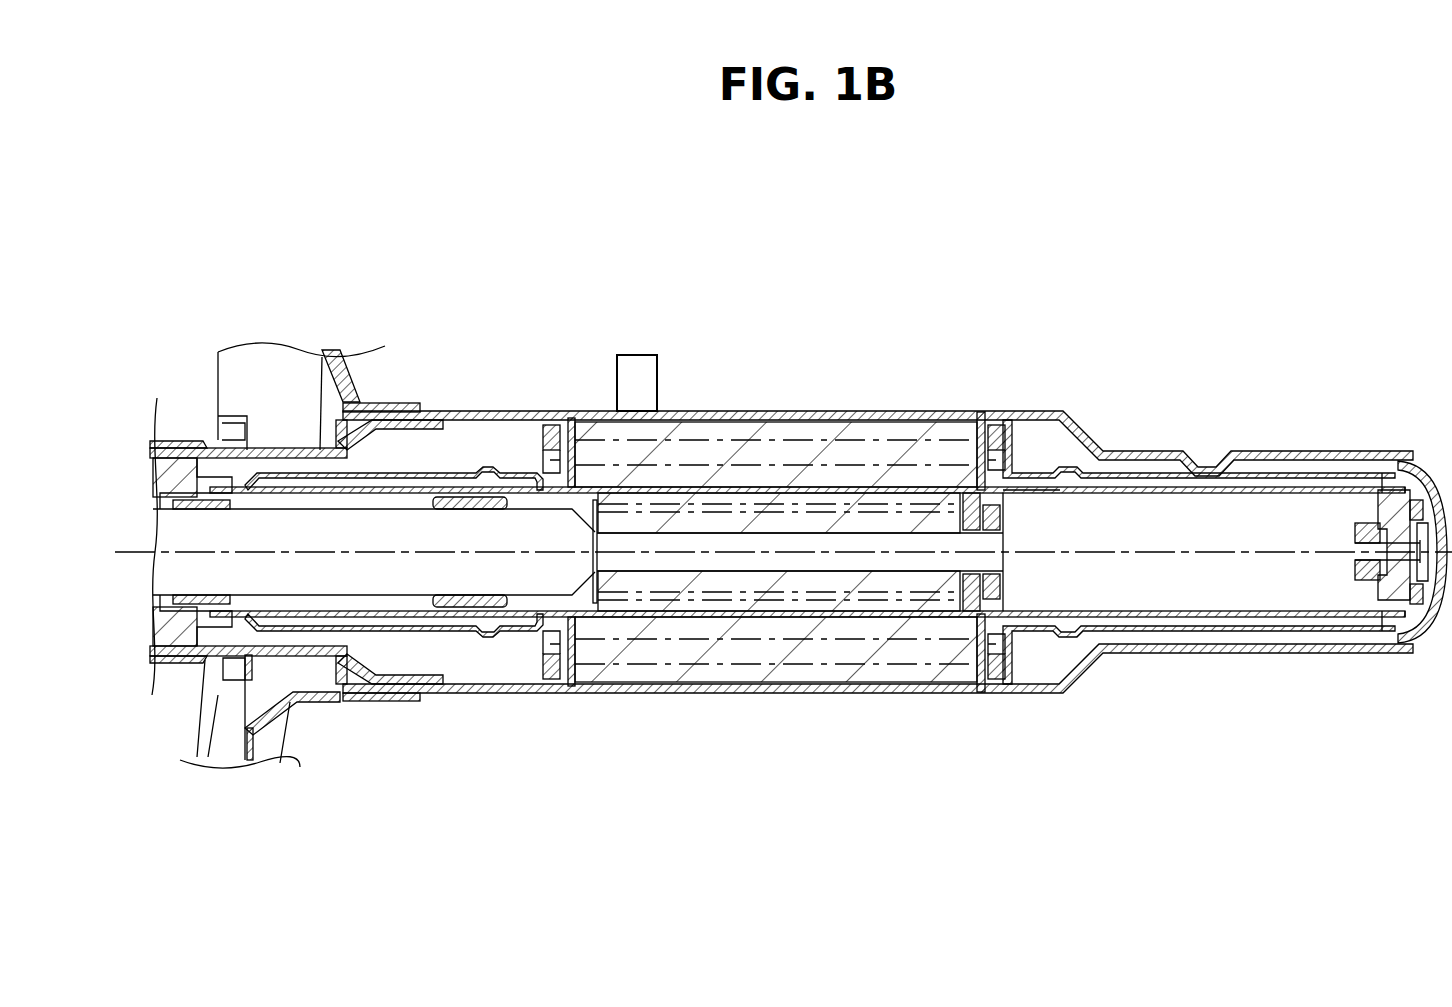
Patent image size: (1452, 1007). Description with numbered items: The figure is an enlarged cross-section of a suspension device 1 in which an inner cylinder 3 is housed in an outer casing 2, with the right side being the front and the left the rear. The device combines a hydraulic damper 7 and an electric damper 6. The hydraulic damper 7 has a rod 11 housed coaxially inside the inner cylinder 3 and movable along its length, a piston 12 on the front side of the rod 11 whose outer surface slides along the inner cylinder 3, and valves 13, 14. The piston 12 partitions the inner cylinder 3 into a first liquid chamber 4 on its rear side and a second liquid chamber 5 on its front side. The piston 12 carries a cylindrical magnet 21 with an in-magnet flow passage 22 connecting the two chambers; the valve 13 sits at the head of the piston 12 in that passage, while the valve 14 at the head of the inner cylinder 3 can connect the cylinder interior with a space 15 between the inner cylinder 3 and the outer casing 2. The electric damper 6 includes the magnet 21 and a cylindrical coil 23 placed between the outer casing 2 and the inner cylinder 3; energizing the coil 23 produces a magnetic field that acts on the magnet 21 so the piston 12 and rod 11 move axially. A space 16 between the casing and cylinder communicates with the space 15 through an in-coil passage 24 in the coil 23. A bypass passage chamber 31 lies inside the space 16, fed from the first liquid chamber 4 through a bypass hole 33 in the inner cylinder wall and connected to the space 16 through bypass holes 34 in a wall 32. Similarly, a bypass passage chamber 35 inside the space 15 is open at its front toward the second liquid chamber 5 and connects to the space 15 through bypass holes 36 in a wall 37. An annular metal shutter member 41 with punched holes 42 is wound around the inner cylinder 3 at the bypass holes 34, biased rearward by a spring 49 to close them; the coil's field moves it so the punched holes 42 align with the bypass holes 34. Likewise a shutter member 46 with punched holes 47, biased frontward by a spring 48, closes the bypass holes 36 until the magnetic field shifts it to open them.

The suspension device 1 is at (1372, 330).
The outer casing 2 is at (865, 411).
The inner cylinder 3 is at (1167, 487).
The first liquid chamber 4 is at (402, 505).
The second liquid chamber 5 is at (1303, 522).
The electric damper 6 is at (767, 627).
The hydraulic damper 7 is at (587, 602).
The rod 11 is at (408, 567).
The piston 12 is at (1005, 520).
The valve 13 is at (1005, 590).
The valve 14 is at (1390, 588).
The space 15 is at (1347, 465).
The space 16 is at (205, 473).
The magnet 21 is at (710, 602).
The in-magnet flow passage 22 is at (828, 597).
The coil 23 is at (853, 673).
The in-coil passage 24 is at (917, 700).
The bypass passage chamber 31 is at (307, 483).
The wall 32 is at (465, 500).
The bypass hole 33 is at (275, 508).
The bypass holes 34 is at (515, 485).
The bypass passage chamber 35 is at (1245, 482).
The bypass holes 36 is at (1040, 498).
The wall 37 is at (1132, 477).
The shutter member 41 is at (547, 500).
The punched holes 42 is at (517, 485).
The shutter member 46 is at (1008, 467).
The punched holes 47 is at (1040, 462).
The spring 48 is at (965, 425).
The spring 49 is at (591, 418).